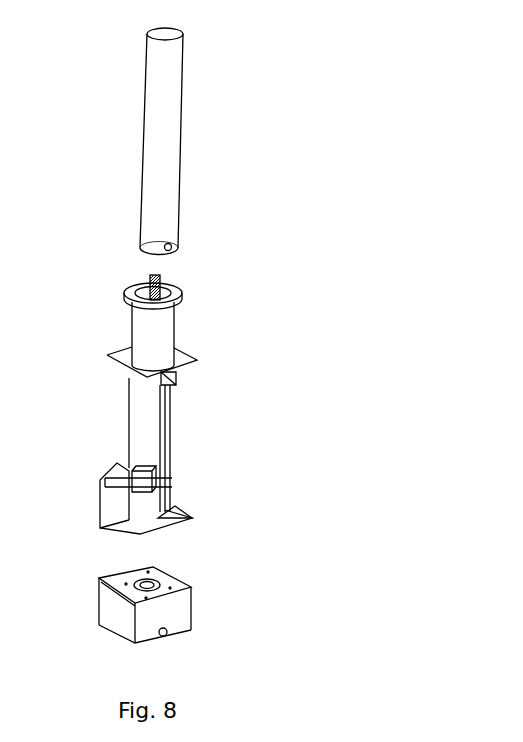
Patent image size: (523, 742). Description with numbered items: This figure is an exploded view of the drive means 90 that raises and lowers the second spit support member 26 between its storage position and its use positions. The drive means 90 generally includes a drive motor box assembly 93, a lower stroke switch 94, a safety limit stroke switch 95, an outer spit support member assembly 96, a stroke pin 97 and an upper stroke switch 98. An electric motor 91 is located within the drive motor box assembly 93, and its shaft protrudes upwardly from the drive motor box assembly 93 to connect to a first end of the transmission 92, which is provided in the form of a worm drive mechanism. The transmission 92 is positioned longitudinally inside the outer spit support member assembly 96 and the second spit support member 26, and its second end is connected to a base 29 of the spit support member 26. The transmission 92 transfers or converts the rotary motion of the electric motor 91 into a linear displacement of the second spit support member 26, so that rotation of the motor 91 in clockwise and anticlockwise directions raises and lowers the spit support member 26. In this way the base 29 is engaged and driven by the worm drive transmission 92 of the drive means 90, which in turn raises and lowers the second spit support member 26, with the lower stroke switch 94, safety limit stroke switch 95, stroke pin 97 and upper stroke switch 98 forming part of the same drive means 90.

The second spit support member 26 is at (160, 114).
The drive means 90 is at (342, 147).
The base 29 is at (140, 247).
The stroke pin 97 is at (176, 248).
The transmission 92 is at (183, 290).
The upper stroke switch 98 is at (176, 374).
The outer spit support member assembly 96 is at (170, 437).
The safety limit stroke switch 95 is at (172, 482).
The lower stroke switch 94 is at (192, 519).
The electric motor 91 is at (162, 580).
The drive motor box assembly 93 is at (170, 617).